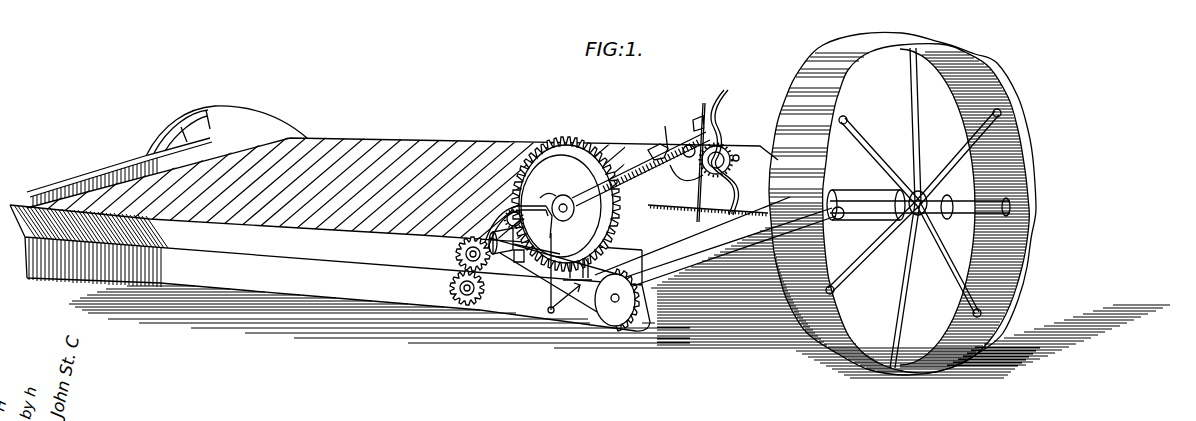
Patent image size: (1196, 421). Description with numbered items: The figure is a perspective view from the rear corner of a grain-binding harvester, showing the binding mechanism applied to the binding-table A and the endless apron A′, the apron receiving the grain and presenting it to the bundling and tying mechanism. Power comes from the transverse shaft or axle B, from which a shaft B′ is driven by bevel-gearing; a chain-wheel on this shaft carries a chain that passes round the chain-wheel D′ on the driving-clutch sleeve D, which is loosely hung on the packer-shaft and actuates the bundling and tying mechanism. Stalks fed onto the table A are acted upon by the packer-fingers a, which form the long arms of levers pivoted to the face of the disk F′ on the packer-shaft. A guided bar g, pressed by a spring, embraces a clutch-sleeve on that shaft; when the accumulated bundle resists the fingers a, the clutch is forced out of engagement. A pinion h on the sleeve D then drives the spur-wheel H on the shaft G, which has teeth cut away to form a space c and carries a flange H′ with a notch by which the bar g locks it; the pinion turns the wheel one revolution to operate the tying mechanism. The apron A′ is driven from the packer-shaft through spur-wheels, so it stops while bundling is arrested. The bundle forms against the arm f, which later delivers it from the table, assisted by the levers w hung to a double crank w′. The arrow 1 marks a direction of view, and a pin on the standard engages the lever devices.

The binding-table A is at (400, 244).
The endless apron A′ is at (389, 210).
The transverse shaft or axle B is at (902, 203).
The shaft B′ is at (729, 248).
The space c is at (548, 192).
The driving-clutch sleeve D is at (530, 232).
The chain-wheel D′ is at (519, 258).
The disk F′ is at (655, 147).
The shaft G is at (641, 169).
The pinion G′ is at (687, 145).
The guided bar g is at (515, 223).
The pinion h is at (518, 205).
The spur-wheel H is at (582, 150).
The flange H′ is at (574, 208).
The levers w is at (730, 204).
The double crank w′ is at (702, 188).
The arm f is at (732, 152).
The arrow 1 is at (740, 156).
The packer-fingers a is at (664, 132).